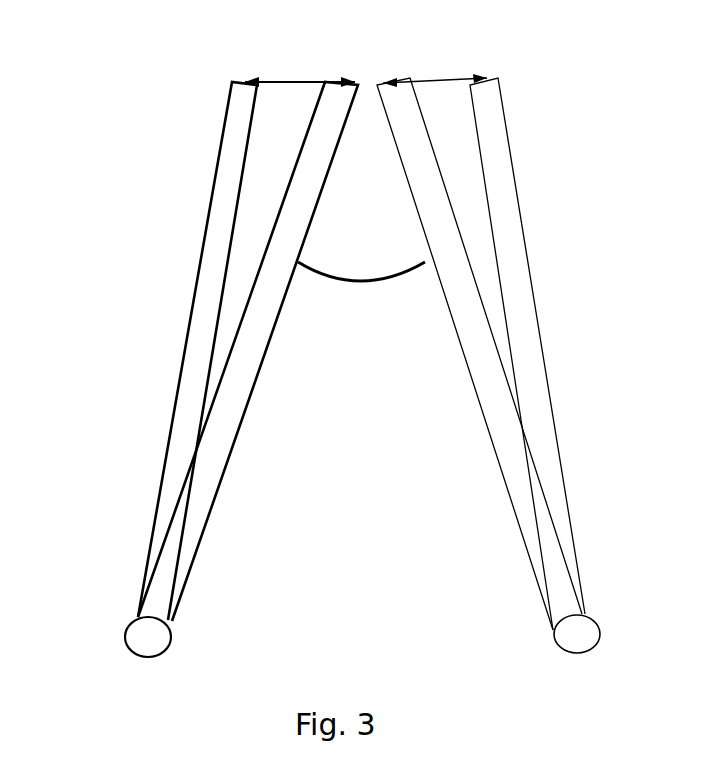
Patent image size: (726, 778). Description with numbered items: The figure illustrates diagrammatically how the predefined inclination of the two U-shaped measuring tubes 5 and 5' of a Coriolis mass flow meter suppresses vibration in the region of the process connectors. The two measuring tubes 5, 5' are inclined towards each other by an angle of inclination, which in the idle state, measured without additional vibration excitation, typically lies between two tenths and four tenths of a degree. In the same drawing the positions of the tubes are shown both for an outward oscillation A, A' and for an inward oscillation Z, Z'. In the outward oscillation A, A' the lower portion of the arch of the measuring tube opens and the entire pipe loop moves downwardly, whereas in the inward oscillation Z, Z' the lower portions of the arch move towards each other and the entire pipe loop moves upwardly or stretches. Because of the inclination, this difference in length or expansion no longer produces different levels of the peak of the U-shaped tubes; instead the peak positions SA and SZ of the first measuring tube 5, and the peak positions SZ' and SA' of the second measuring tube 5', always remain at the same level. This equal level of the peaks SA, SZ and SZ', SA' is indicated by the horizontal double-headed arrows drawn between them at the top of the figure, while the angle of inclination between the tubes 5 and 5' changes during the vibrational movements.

The U-shaped measuring tube 5 is at (202, 369).
The U-shaped measuring tube 5' is at (531, 365).
The outward oscillation A is at (197, 351).
The inward oscillation Z is at (248, 351).
The inward oscillation Z' is at (479, 354).
The outward oscillation A' is at (527, 354).
The peak position in outward oscillation SA is at (249, 54).
The peak position in inward oscillation SZ is at (327, 54).
The peak position in inward oscillation SZ' is at (406, 54).
The peak position in outward oscillation SA' is at (487, 51).